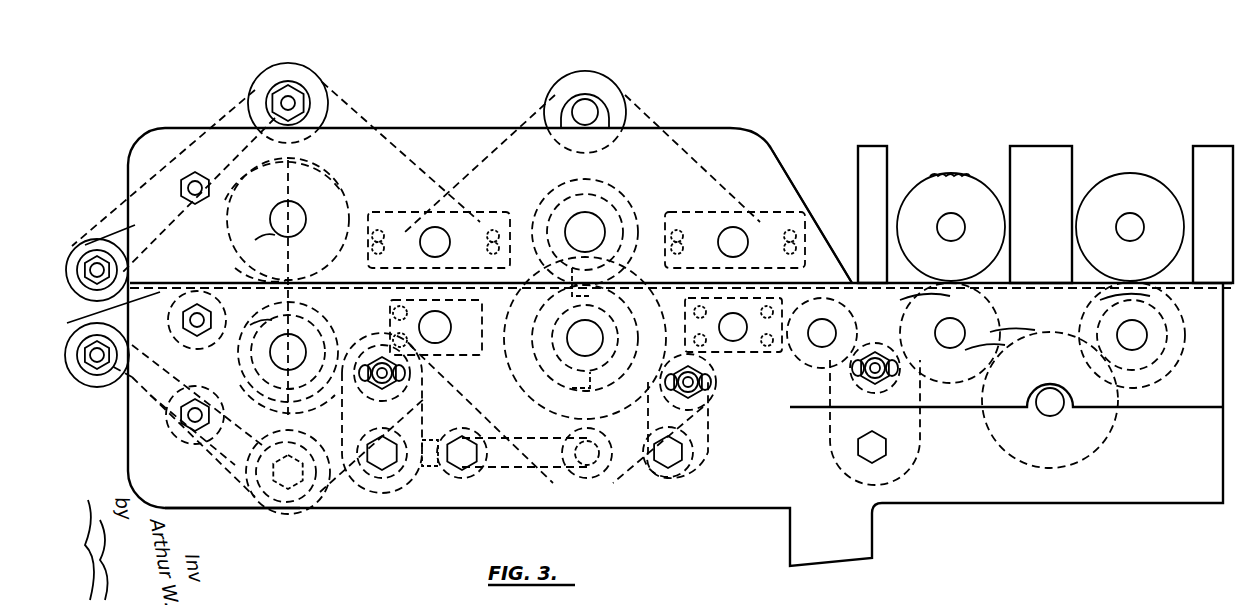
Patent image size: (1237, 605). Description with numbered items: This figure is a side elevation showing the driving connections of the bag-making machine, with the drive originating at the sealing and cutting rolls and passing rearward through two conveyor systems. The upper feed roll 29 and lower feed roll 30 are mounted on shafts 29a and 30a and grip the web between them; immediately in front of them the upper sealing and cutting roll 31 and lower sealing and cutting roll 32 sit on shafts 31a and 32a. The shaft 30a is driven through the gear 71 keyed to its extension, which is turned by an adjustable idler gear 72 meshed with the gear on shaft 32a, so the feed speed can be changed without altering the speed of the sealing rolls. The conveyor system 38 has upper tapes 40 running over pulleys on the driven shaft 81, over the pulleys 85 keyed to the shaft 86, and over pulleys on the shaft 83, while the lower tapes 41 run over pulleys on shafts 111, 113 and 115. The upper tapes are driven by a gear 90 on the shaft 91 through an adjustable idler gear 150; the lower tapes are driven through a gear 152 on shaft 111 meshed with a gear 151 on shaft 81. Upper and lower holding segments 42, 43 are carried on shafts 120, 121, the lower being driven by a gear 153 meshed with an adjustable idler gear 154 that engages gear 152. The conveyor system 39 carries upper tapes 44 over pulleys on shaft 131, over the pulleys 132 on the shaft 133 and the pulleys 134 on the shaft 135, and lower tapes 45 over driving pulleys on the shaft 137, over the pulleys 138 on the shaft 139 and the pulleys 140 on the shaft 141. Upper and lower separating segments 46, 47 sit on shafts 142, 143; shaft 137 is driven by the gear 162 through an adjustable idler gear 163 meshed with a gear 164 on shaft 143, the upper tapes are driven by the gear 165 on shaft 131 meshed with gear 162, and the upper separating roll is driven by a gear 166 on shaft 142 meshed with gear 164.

The shaft 133 is at (296, 70).
The pulleys 132 is at (318, 92).
The upper tapes 44 is at (355, 112).
The pulleys 85 is at (604, 82).
The shaft 86 is at (598, 115).
The upper tapes 40 is at (662, 128).
The conveyor system 38 is at (680, 148).
The upper sealing and cutting roll 31 is at (968, 182).
The shaft 31a is at (965, 227).
The upper feed roll 29 is at (1143, 180).
The shaft 29a is at (1144, 227).
The pulleys 134 is at (78, 238).
The shaft 135 is at (100, 238).
The shaft 141 is at (88, 385).
The pulleys 140 is at (97, 387).
The upper separating segments 46 is at (282, 185).
The shaft 142 is at (302, 215).
The gear 166 is at (235, 256).
The gear 165 is at (385, 212).
The shaft 131 is at (450, 236).
The shaft 83 is at (446, 230).
The upper holding segments 42 is at (578, 192).
The shaft 120 is at (605, 225).
The gear 151 is at (700, 212).
The driven shaft 81 is at (745, 228).
The lower separating segments 47 is at (300, 320).
The shaft 143 is at (270, 355).
The gear 164 is at (300, 405).
The shaft 137 is at (395, 318).
The shaft 115 is at (455, 325).
The lower holding segments 43 is at (605, 305).
The gear 153 is at (548, 410).
The shaft 121 is at (603, 338).
The gear 152 is at (750, 352).
The shaft 111 is at (747, 327).
The shaft 91 is at (836, 330).
The lower sealing and cutting roll 32 is at (998, 318).
The shaft 32a is at (958, 345).
The lower feed roll 30 is at (1180, 312).
The shaft 30a is at (1150, 332).
The gear 71 is at (1160, 355).
The adjustable idler gear 72 is at (1112, 428).
The gear 162 is at (445, 370).
The adjustable idler gear 163 is at (378, 402).
The adjustable idler gear 154 is at (668, 400).
The lower tapes 41 is at (640, 478).
The gear 90 is at (800, 372).
The adjustable idler gear 150 is at (858, 380).
The shaft 113 is at (565, 478).
The shaft 139 is at (290, 500).
The pulleys 138 is at (270, 500).
The conveyor system 39 is at (225, 508).
The lower tapes 45 is at (182, 455).